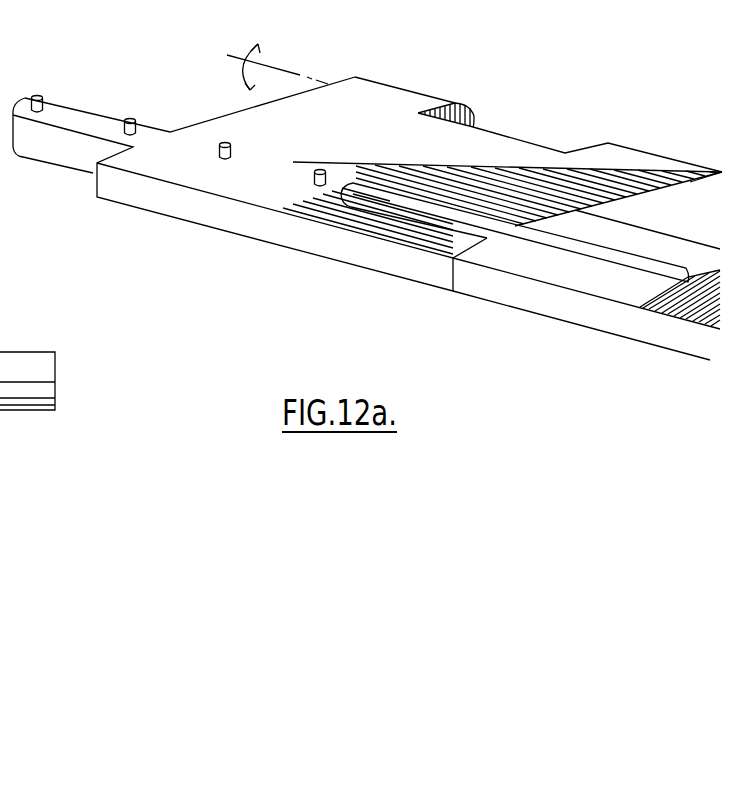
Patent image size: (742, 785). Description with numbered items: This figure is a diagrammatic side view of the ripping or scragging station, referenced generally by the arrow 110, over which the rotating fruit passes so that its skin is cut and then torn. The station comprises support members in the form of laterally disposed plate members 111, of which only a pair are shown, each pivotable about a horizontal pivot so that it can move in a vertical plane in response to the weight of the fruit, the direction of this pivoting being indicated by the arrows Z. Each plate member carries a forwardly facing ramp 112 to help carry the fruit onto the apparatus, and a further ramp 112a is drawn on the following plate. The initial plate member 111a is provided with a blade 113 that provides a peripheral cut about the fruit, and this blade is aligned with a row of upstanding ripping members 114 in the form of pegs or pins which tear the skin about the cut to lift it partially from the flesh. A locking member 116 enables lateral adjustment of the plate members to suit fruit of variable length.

The ripping or scragging means 110 is at (505, 123).
The support member 111 is at (398, 116).
The initial plate member 111a is at (682, 207).
The forwardly facing ramp 112 is at (593, 192).
The second inclined surface 112a is at (713, 317).
The blade 113 is at (535, 238).
The upstanding ripping members 114 is at (218, 146).
The locking member 116 is at (0, 560).